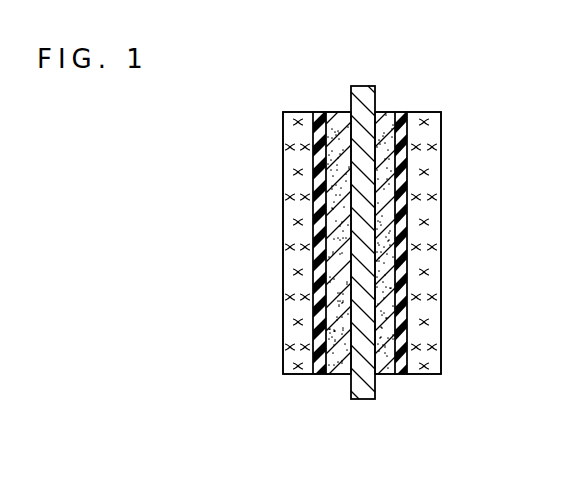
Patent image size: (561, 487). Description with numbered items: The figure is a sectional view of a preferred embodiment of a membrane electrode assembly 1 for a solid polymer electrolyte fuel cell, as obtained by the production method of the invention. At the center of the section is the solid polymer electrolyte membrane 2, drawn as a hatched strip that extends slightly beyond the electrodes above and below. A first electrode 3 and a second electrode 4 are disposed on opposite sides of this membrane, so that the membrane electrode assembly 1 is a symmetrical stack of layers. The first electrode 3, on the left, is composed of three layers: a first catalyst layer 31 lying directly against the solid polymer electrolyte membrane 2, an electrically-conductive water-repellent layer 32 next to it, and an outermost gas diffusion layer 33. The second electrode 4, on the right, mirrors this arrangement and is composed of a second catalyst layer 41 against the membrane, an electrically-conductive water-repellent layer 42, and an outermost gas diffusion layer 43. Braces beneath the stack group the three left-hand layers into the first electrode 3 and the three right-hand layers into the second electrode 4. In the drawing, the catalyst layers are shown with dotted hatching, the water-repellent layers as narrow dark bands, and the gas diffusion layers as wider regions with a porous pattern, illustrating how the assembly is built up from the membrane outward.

The membrane electrode assembly 1 is at (384, 85).
The solid polymer electrolyte membrane 2 is at (353, 96).
The first electrode 3 is at (348, 404).
The first catalyst layer 31 is at (333, 185).
The electrically-conductive water-repellent layer 32 is at (322, 236).
The gas diffusion layer 33 is at (297, 313).
The second electrode 4 is at (438, 404).
The second catalyst layer 41 is at (378, 202).
The electrically-conductive water-repellent layer 42 is at (398, 229).
The gas diffusion layer 43 is at (422, 292).